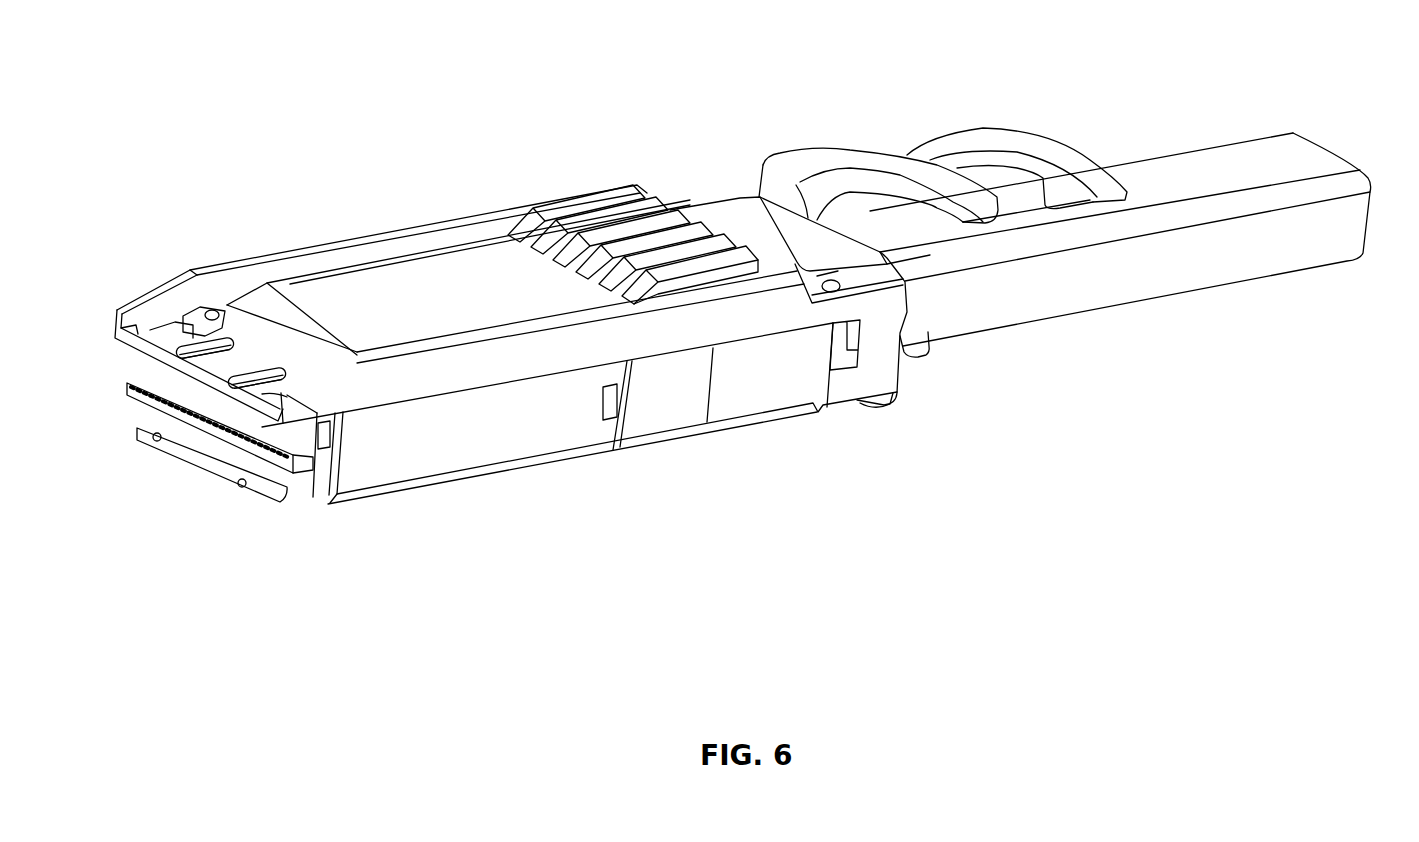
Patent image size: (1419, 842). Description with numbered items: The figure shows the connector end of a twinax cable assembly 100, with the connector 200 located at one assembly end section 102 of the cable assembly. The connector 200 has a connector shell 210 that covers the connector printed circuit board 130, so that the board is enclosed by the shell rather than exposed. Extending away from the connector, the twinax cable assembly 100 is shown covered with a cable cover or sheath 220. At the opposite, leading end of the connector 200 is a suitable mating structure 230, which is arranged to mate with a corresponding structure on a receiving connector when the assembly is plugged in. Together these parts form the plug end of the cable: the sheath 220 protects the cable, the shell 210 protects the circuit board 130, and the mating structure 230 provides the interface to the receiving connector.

The twinax cable assembly 100 is at (1232, 325).
The assembly end section 102 is at (507, 121).
The connector printed circuit board 130 is at (290, 470).
The connector 200 is at (373, 238).
The connector shell 210 is at (579, 412).
The cable cover or sheath 220 is at (943, 140).
The mating structure 230 is at (140, 276).